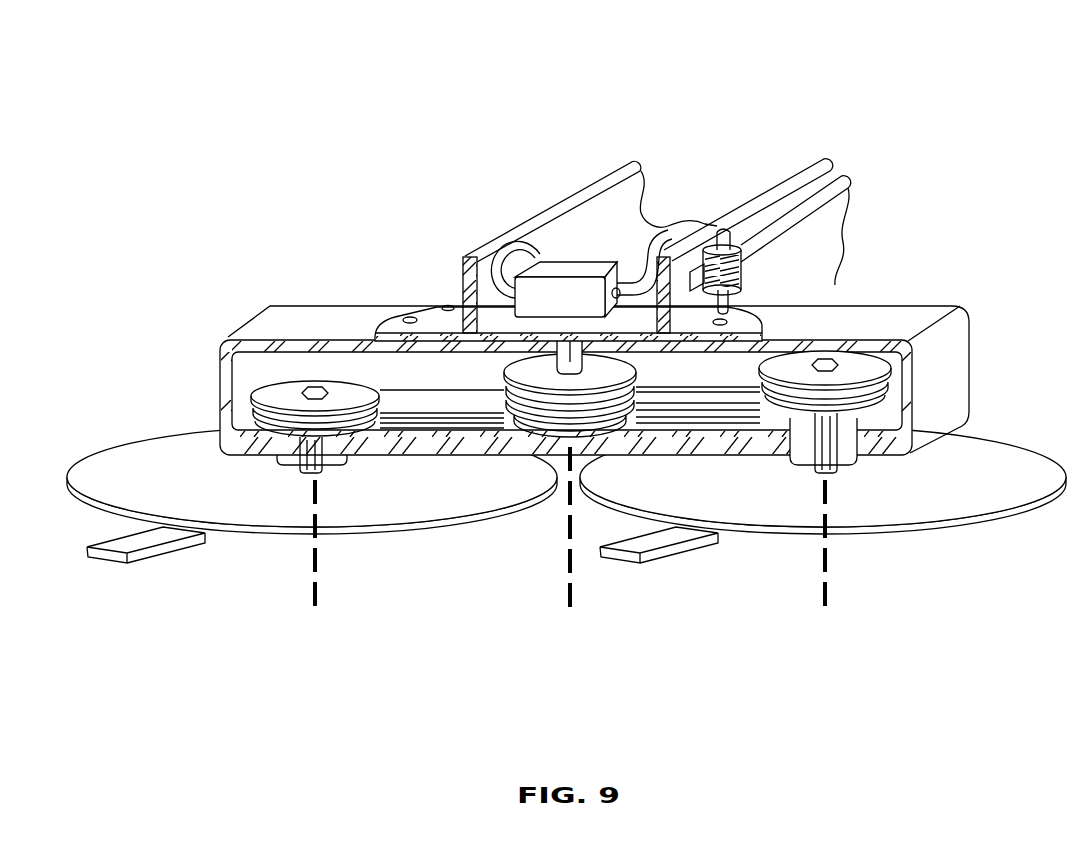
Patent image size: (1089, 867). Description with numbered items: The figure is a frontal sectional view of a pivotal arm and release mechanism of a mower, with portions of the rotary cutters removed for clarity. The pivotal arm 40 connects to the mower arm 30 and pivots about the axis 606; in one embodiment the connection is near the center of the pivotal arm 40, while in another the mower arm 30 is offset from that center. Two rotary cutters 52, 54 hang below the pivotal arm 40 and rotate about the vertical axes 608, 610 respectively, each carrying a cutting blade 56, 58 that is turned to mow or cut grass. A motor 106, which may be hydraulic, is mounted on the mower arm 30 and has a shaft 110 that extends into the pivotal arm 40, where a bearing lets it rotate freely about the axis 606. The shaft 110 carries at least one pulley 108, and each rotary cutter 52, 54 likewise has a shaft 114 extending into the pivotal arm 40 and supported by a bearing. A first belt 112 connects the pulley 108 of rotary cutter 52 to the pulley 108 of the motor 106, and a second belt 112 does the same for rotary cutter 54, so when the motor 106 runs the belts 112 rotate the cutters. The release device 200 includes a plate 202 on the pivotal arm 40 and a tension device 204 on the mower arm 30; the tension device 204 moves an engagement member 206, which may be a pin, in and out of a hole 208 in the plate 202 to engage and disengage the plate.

The mower arm 30 is at (582, 186).
The pivotal arm 40 is at (972, 404).
The rotary cutter 52 is at (244, 498).
The rotary cutter 54 is at (930, 498).
The cutting blade 56 is at (160, 557).
The cutting blade 58 is at (673, 557).
The motor 106 is at (568, 266).
The pulley 108 is at (278, 395).
The shaft 110 is at (520, 375).
The belt 112 is at (403, 430).
The shaft 114 is at (298, 478).
The release device 200 is at (899, 158).
The plate 202 is at (425, 296).
The tension device 204 is at (745, 250).
The engagement member 206 is at (746, 272).
The hole 208 is at (392, 320).
The axis 606 is at (570, 570).
The axis 608 is at (825, 570).
The axis 610 is at (315, 570).